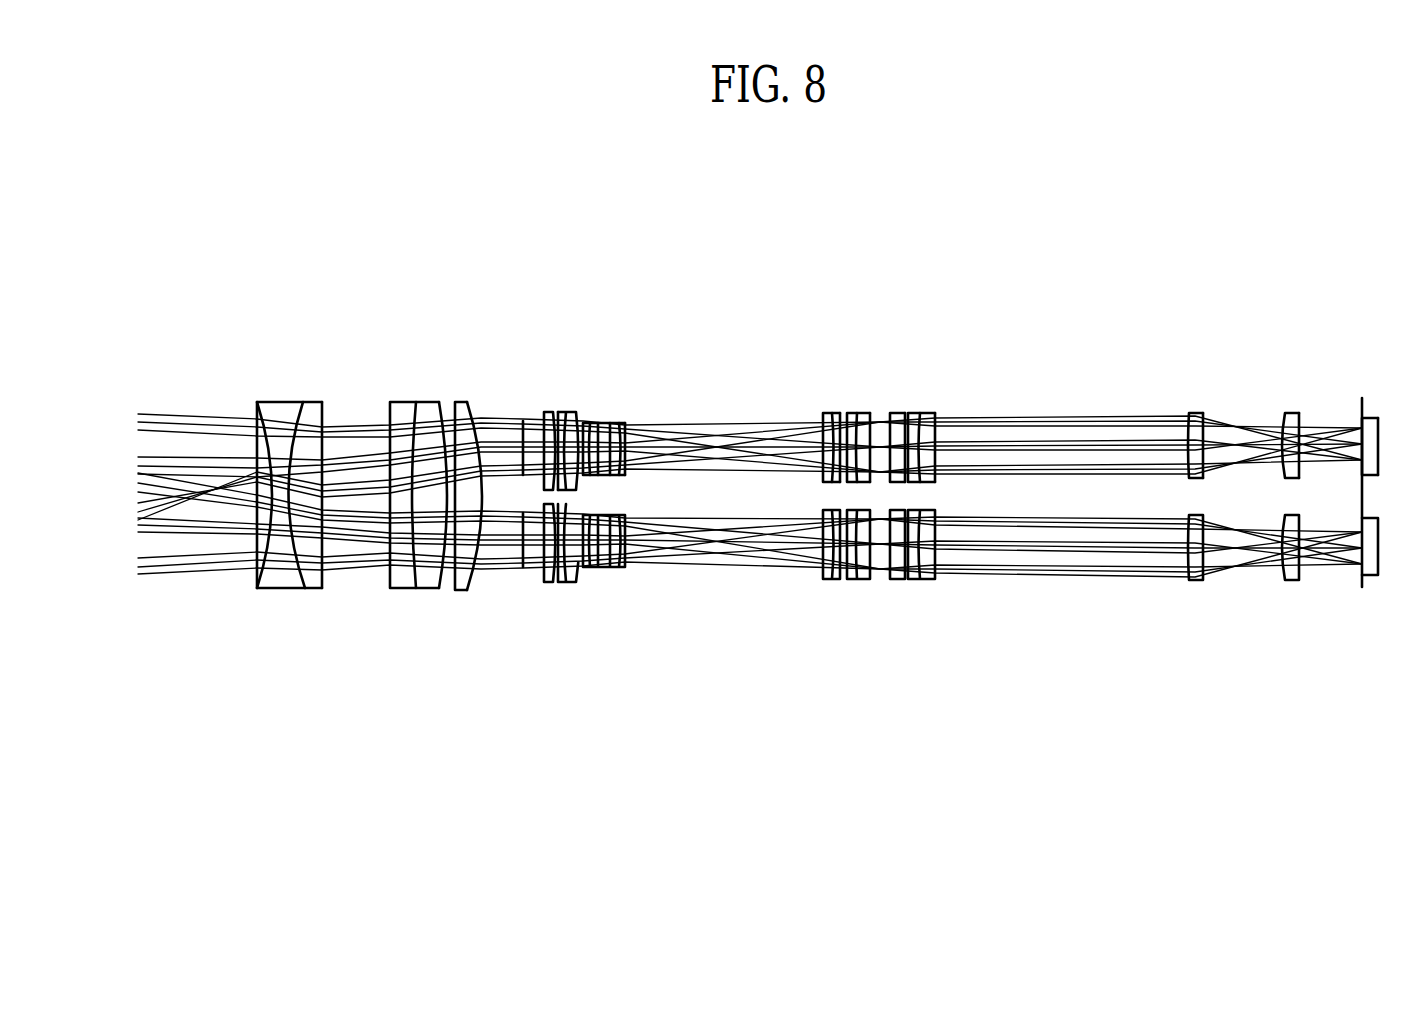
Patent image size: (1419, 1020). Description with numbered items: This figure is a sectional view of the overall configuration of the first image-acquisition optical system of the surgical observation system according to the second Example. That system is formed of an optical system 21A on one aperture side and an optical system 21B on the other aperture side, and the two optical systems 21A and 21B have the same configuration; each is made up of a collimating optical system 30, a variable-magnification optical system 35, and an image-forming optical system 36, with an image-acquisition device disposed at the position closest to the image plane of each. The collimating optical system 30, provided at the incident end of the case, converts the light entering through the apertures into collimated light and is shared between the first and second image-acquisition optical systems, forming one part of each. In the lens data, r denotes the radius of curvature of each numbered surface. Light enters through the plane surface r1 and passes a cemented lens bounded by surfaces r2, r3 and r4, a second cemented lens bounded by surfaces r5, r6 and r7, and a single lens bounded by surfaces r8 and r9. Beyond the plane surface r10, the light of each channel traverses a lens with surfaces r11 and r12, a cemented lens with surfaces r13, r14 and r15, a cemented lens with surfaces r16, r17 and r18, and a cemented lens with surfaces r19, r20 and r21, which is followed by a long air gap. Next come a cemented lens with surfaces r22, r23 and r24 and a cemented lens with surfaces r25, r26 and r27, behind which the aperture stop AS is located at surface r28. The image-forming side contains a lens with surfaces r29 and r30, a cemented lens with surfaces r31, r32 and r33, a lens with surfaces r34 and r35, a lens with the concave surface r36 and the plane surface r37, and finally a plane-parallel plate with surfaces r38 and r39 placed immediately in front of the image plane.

The surface no. 1 r1 is at (258, 406).
The surface no. 2 r2 is at (261, 411).
The surface no. 3 r3 is at (303, 405).
The surface no. 4 r4 is at (324, 410).
The surface no. 5 r5 is at (389, 408).
The surface no. 6 r6 is at (413, 408).
The surface no. 7 r7 is at (446, 408).
The surface no. 8 r8 is at (394, 586).
The surface no. 9 r9 is at (478, 410).
The surface no. 10 r10 is at (519, 566).
The surface no. 11 r11 is at (523, 421).
The surface no. 12 r12 is at (544, 412).
The surface no. 13 r13 is at (555, 576).
The surface no. 14 r14 is at (558, 412).
The surface no. 15 r15 is at (578, 486).
The surface no. 16 r16 is at (583, 423).
The surface no. 17 r17 is at (590, 423).
The surface no. 18 r18 is at (598, 423).
The surface no. 19 r19 is at (610, 423).
The surface no. 20 r20 is at (619, 475).
The surface no. 21 r21 is at (625, 423).
The surface no. 22 r22 is at (823, 413).
The surface no. 23 r23 is at (832, 413).
The surface no. 24 r24 is at (840, 413).
The surface no. 25 r25 is at (847, 480).
The surface no. 26 r26 is at (857, 413).
The surface no. 27 r27 is at (870, 480).
The aperture stop r28 is at (880, 413).
The surface no. 29 r29 is at (890, 413).
The surface no. 30 r30 is at (906, 480).
The surface no. 31 r31 is at (908, 413).
The surface no. 32 r32 is at (928, 418).
The surface no. 33 r33 is at (937, 460).
The surface no. 34 r34 is at (1189, 415).
The surface no. 35 r35 is at (1203, 413).
The surface no. 36 r36 is at (1284, 413).
The surface no. 37 r37 is at (1299, 413).
The surface no. 38 r38 is at (1361, 416).
The surface no. 39 r39 is at (1378, 418).
The collimating optical system 30 is at (355, 510).
The variable-magnification optical system 35 is at (657, 616).
The image-forming optical system 36 is at (1378, 667).
The optical system at the aperture 21L side 21A is at (1358, 220).
The optical system at the aperture 21R side 21B is at (1390, 758).